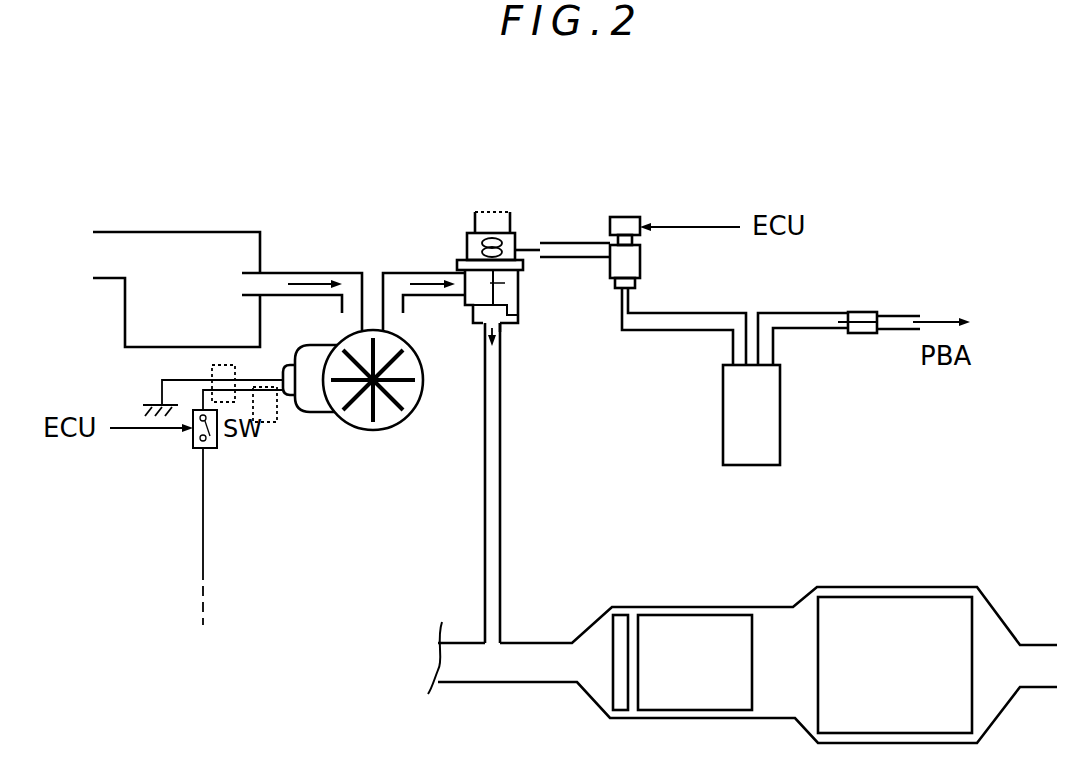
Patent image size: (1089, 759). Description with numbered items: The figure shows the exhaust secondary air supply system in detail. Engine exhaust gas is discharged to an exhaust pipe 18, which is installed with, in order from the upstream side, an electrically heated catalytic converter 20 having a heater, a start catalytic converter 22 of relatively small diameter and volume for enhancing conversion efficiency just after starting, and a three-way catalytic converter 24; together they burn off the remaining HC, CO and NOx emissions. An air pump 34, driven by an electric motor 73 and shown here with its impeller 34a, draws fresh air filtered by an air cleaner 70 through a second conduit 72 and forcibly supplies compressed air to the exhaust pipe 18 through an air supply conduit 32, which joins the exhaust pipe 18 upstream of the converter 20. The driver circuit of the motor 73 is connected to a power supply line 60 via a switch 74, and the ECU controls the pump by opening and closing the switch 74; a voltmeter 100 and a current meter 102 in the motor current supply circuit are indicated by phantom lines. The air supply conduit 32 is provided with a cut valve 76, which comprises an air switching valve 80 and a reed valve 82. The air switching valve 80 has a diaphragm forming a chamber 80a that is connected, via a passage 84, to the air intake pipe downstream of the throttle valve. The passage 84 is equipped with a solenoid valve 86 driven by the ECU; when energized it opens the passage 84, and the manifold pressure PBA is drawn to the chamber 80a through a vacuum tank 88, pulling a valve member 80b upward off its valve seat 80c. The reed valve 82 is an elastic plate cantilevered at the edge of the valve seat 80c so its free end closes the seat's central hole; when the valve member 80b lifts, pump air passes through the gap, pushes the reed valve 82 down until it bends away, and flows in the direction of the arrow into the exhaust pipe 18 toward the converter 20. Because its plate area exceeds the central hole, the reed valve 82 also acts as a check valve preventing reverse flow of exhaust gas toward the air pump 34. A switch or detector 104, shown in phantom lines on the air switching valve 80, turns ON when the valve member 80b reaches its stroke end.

The exhaust pipe 18 is at (452, 643).
The electrically heated catalytic converter 20 is at (623, 623).
The start catalytic converter 22 is at (682, 620).
The three-way catalytic converter 24 is at (898, 608).
The air supply conduit 32 is at (390, 273).
The air pump 34 is at (388, 431).
The pump impeller 34a is at (407, 394).
The power supply line 60 is at (203, 525).
The air cleaner 70 is at (242, 232).
The second conduit 72 is at (272, 273).
The electric motor 73 is at (318, 412).
The switch 74 is at (193, 448).
The cut valve 76 is at (457, 309).
The air switching valve 80 is at (527, 237).
The chamber 80a is at (500, 212).
The valve member 80b is at (490, 283).
The valve seat 80c is at (515, 328).
The reed valve 82 is at (480, 325).
The passage 84 is at (577, 258).
The solenoid valve 86 is at (605, 220).
The vacuum tank 88 is at (780, 432).
The voltmeter 100 is at (212, 365).
The current meter 102 is at (267, 422).
The switch or detector 104 is at (477, 208).